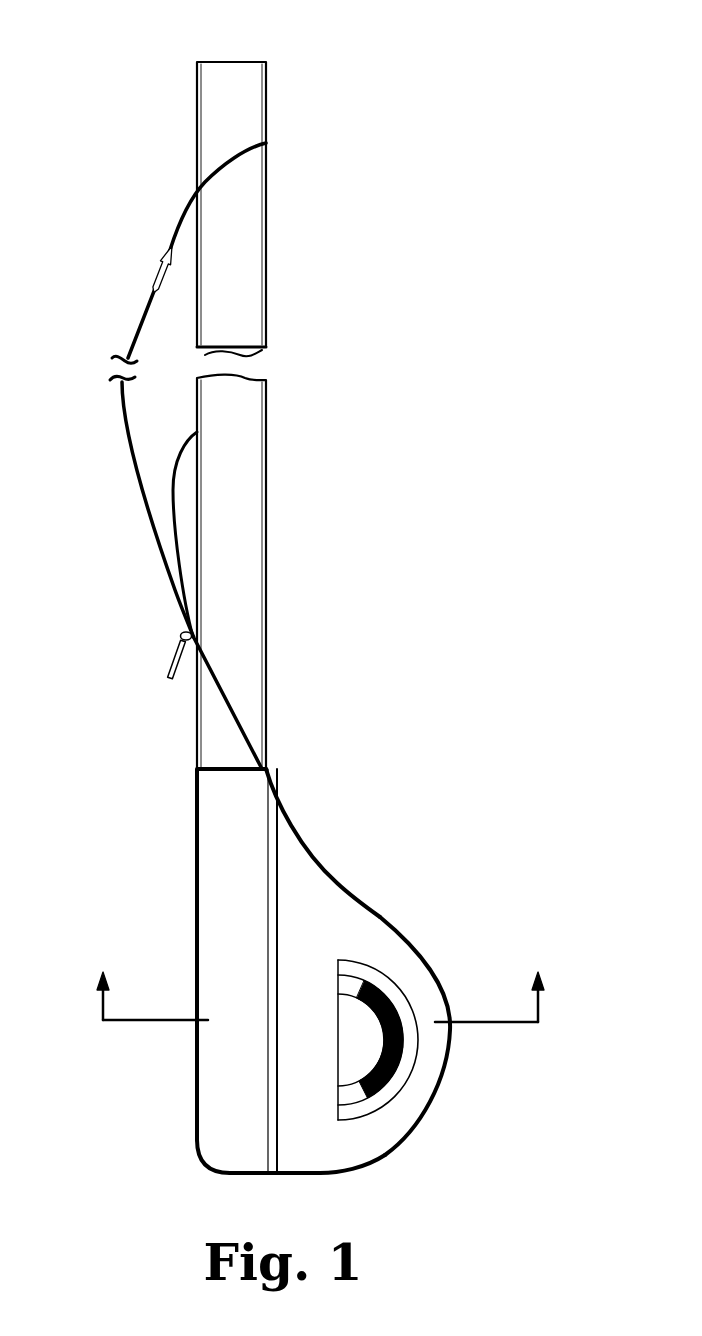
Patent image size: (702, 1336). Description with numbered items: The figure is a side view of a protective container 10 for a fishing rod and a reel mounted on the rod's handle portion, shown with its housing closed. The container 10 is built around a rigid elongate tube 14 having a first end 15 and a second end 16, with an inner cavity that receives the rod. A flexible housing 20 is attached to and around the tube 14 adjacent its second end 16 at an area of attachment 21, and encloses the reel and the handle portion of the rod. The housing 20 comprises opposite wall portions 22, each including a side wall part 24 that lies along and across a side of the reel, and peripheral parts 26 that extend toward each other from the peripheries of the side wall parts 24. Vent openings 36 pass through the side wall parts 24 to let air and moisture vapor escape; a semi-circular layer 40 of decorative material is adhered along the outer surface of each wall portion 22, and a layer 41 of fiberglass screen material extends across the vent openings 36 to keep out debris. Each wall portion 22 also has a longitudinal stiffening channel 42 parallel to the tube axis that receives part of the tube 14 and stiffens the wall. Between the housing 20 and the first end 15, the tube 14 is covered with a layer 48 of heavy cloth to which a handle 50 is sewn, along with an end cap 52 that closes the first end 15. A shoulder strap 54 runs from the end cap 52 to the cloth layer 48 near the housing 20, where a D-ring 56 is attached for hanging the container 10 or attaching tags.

The container 10 is at (281, 585).
The rigid elongate tube 14 is at (248, 353).
The first end 15 is at (228, 74).
The second end 16 is at (245, 1160).
The flexible housing 20 is at (344, 918).
The area of attachment 21 is at (225, 769).
The opposite wall portions 22 is at (402, 1113).
The side wall parts 24 is at (322, 891).
The peripheral parts 26 is at (210, 1123).
The vent openings 36 is at (380, 993).
The semi-circular layer of decorative material 40 is at (345, 1037).
The layer of fiberglass screen material 41 is at (368, 1058).
The longitudinal stiffening channel 42 is at (265, 933).
The layer of heavy cloth 48 is at (249, 493).
The handle 50 is at (173, 473).
The end cap 52 is at (213, 105).
The shoulder strap 54 is at (138, 329).
The D-ring 56 is at (176, 660).